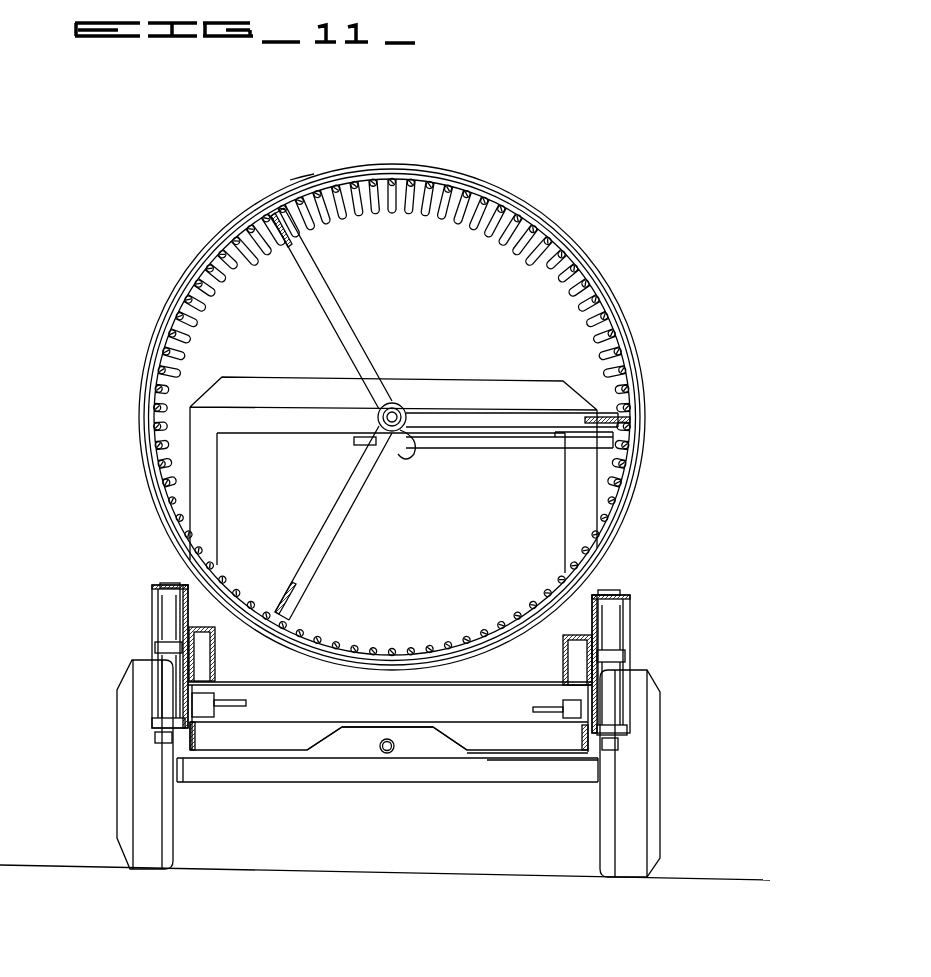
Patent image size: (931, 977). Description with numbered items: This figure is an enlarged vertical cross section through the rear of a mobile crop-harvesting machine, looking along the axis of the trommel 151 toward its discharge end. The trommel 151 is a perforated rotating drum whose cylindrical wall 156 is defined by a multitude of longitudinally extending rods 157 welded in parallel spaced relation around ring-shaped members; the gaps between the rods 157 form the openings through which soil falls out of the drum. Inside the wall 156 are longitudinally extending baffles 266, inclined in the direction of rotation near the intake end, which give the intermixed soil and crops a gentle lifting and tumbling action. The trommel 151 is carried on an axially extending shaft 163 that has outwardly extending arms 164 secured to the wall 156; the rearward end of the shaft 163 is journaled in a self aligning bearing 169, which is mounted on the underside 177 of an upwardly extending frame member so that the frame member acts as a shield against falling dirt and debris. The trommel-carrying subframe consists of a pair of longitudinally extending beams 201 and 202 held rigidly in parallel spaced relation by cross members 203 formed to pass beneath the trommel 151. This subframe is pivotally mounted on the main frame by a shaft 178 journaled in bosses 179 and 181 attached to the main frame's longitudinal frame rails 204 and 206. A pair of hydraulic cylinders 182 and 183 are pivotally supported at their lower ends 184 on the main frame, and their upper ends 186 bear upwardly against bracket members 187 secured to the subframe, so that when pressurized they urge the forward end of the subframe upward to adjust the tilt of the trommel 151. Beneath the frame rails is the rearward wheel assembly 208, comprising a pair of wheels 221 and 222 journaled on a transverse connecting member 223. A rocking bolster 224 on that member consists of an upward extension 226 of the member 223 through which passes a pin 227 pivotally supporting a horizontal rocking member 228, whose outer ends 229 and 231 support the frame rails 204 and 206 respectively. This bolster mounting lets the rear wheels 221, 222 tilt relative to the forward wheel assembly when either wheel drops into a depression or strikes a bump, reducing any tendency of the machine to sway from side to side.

The trommel 151 is at (497, 184).
The perforated cylindrical wall 156 is at (298, 187).
The longitudinally extending rods 157 is at (226, 250).
The axially extending shaft 163 is at (401, 408).
The outwardly extending arms 164 is at (326, 318).
The self aligning bearing 169 is at (354, 441).
The underside of frame member 177 is at (292, 438).
The shaft 178 is at (240, 704).
The boss 179 is at (192, 703).
The boss 181 is at (582, 711).
The hydraulic cylinder 182 is at (160, 675).
The hydraulic cylinder 183 is at (615, 682).
The lower ends of cylinders 184 is at (163, 742).
The upper ends of cylinders 186 is at (163, 590).
The bracket members 187 is at (178, 614).
The longitudinally extending beam 201 is at (210, 676).
The longitudinally extending beam 202 is at (572, 674).
The cross members 203 is at (506, 711).
The longitudinal frame rail 204 is at (196, 738).
The longitudinal frame rail 206 is at (582, 738).
The rearward wheel assembly 208 is at (116, 828).
The wheel 221 is at (140, 794).
The wheel 222 is at (630, 815).
The transverse connecting member 223 is at (496, 777).
The rocking bolster 224 is at (378, 722).
The upward extension 226 is at (436, 711).
The pin 227 is at (395, 752).
The horizontal rocking member 228 is at (299, 742).
The outer end of rocking member 229 is at (276, 762).
The outer end of rocking member 231 is at (566, 746).
The baffles 266 is at (271, 250).